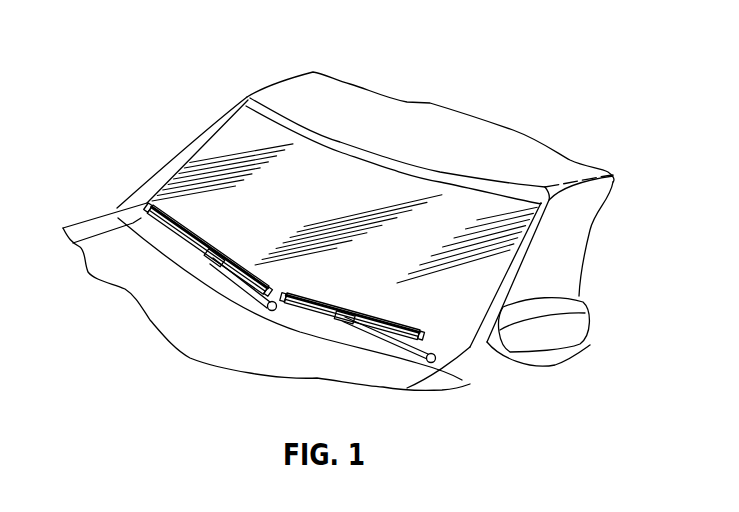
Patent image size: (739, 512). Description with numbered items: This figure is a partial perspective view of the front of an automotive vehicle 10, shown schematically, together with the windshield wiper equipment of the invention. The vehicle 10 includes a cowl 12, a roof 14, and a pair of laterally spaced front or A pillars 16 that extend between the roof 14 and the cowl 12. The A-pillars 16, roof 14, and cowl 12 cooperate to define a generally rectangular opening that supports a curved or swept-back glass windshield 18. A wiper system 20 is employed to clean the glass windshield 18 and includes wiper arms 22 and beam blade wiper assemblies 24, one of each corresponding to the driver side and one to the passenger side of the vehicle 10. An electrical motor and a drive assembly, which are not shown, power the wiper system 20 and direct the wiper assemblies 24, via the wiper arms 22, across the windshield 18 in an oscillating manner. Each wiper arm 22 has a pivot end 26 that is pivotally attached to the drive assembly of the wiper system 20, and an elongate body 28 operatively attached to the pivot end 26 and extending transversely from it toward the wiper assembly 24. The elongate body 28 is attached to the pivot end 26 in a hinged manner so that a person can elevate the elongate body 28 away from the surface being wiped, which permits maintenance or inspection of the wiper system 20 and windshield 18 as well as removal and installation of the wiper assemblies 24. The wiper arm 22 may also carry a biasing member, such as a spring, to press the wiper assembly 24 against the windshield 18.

The vehicle 10 is at (116, 132).
The cowl 12 is at (112, 209).
The roof 14 is at (305, 97).
The A pillars 16 is at (207, 130).
The glass windshield 18 is at (250, 130).
The wiper system 20 is at (228, 331).
The wiper arm 22 is at (235, 297).
The beam blade wiper assembly 24 is at (171, 238).
The pivot end 26 is at (458, 362).
The elongate body 28 is at (216, 293).